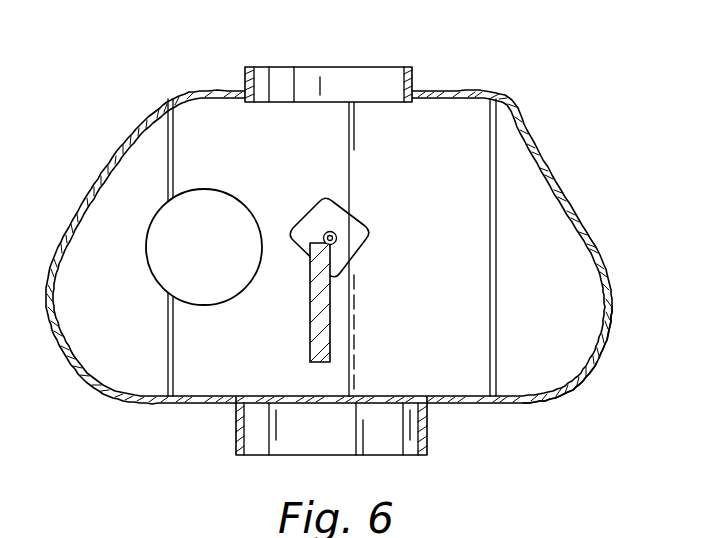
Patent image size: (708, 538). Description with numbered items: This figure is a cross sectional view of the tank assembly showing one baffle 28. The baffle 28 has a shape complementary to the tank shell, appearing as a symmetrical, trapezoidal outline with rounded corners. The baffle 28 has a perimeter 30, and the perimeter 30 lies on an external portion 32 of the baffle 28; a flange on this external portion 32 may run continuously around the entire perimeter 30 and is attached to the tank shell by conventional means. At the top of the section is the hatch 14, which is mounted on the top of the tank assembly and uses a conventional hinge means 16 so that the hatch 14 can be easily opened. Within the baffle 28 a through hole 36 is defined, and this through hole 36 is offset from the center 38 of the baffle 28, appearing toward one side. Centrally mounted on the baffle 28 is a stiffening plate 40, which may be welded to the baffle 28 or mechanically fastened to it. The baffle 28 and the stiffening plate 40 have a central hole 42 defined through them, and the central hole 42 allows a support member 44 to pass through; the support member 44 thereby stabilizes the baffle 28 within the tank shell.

The hatch 14 is at (411, 69).
The hinge means 16 is at (477, 125).
The baffle 28 is at (538, 378).
The perimeter 30 is at (606, 262).
The external portion 32 is at (612, 344).
The through hole 36 is at (205, 306).
The center 38 is at (372, 240).
The stiffening plate 40 is at (333, 255).
The central hole 42 is at (324, 232).
The support member 44 is at (337, 230).